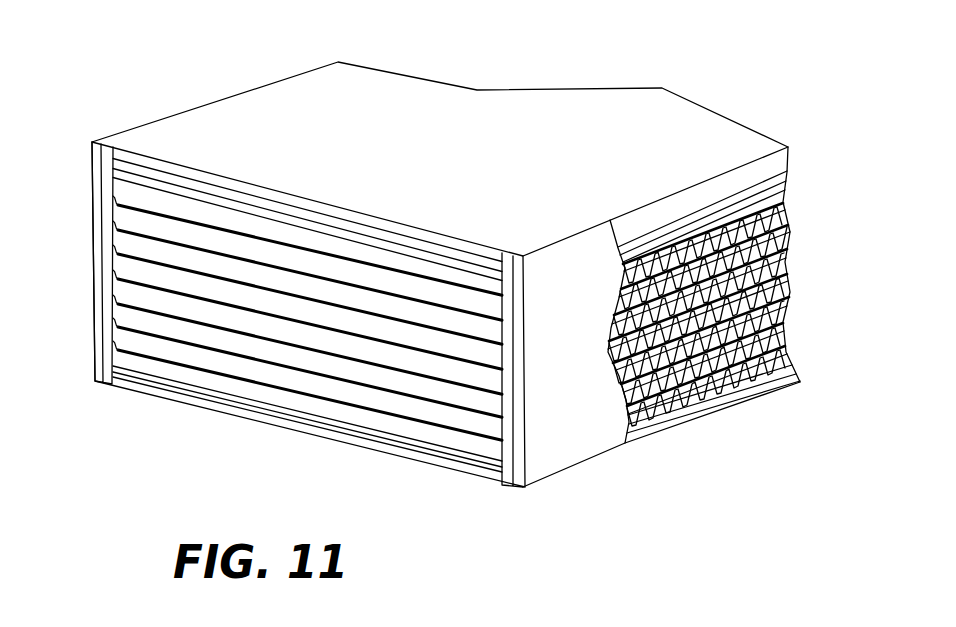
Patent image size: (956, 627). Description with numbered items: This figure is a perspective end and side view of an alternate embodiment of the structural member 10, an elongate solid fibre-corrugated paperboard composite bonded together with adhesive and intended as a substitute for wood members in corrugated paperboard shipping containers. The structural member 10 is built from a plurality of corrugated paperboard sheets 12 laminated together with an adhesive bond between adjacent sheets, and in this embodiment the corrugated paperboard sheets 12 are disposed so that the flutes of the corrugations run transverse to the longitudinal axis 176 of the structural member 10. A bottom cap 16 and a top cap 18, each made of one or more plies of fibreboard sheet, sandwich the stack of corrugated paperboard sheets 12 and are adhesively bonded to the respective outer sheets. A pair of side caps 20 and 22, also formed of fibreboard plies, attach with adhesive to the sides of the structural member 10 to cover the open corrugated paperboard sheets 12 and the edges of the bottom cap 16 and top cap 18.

The structural member 10 is at (174, 112).
The corrugated paperboard sheets 12 is at (787, 245).
The bottom cap 16 is at (201, 395).
The top cap 18 is at (214, 187).
The side cap 20 is at (92, 318).
The side cap 22 is at (518, 490).
The longitudinal axis 176 is at (240, 51).